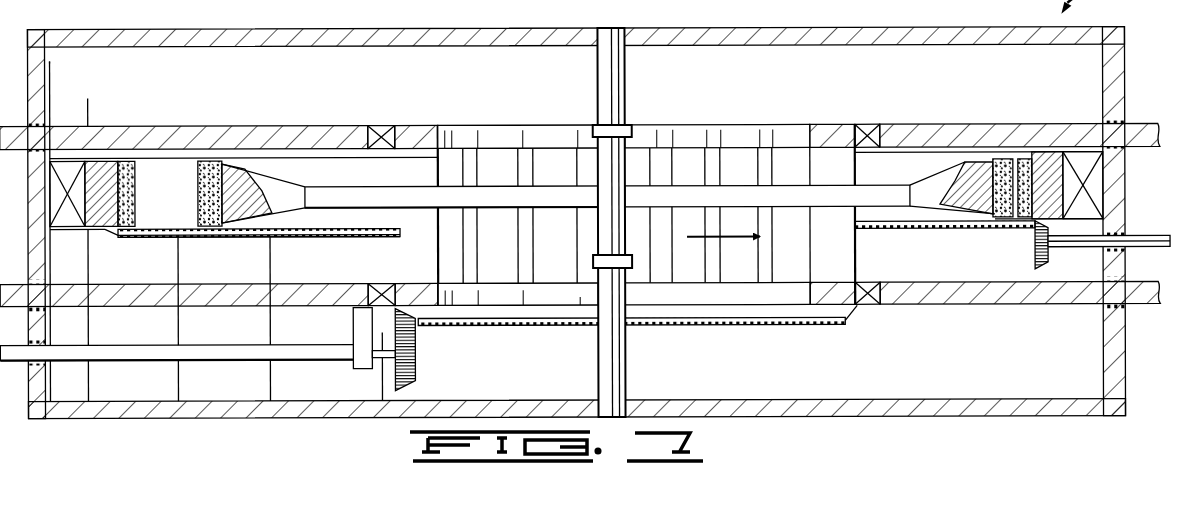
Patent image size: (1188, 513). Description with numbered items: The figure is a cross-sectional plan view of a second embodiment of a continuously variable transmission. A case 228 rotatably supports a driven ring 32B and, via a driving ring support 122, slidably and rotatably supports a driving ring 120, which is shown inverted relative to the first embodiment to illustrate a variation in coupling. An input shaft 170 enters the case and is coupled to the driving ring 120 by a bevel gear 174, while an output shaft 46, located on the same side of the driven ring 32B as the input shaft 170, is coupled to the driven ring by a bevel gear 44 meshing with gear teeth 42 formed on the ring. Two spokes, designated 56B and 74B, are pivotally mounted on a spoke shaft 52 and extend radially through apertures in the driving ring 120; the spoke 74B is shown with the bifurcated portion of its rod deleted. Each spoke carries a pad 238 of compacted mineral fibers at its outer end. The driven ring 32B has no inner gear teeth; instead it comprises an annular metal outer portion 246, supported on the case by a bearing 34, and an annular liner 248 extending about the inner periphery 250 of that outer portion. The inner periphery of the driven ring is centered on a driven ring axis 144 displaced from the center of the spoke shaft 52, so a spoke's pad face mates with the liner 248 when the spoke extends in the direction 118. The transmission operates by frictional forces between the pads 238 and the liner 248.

The housing 228 is at (903, 31).
The driven ring axis 144 is at (572, 97).
The spoke shaft 52 is at (607, 72).
The spoke 74B is at (333, 184).
The driving ring 120 is at (688, 126).
The spoke 56B is at (781, 185).
The driving ring support 122 is at (903, 122).
The annular liner 248 is at (1006, 160).
The pad 238 is at (1008, 166).
The inner periphery 250 is at (1022, 162).
The bearing 34 is at (1097, 168).
The driven ring 32B is at (1070, 195).
The annular metal outer portion 246 is at (1070, 212).
The gear teeth 42 is at (885, 232).
The bevel gear 44 is at (1033, 252).
The output shaft 46 is at (1140, 245).
The direction 118 is at (730, 245).
The input shaft 170 is at (232, 347).
The bevel gear 174 is at (396, 372).